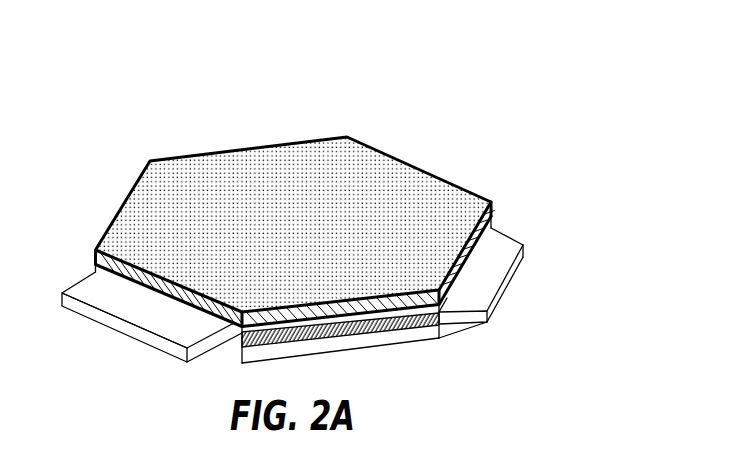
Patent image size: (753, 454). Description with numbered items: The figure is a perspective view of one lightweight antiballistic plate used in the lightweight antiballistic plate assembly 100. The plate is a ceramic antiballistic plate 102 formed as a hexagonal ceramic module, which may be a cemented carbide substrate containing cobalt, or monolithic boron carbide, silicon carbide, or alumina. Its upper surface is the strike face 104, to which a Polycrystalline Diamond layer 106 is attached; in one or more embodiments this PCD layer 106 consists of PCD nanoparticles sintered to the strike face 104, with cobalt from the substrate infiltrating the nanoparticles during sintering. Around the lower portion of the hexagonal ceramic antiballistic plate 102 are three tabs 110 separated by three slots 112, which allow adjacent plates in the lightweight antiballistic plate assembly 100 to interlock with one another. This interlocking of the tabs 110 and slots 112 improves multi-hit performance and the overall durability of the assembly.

The lightweight antiballistic plate assembly 100 is at (323, 196).
The ceramic antiballistic plate 102 is at (295, 193).
The strike face 104 is at (317, 313).
The Polycrystalline Diamond (PCD) layer 106 is at (389, 177).
The tabs 110 is at (157, 324).
The slots 112 is at (360, 335).